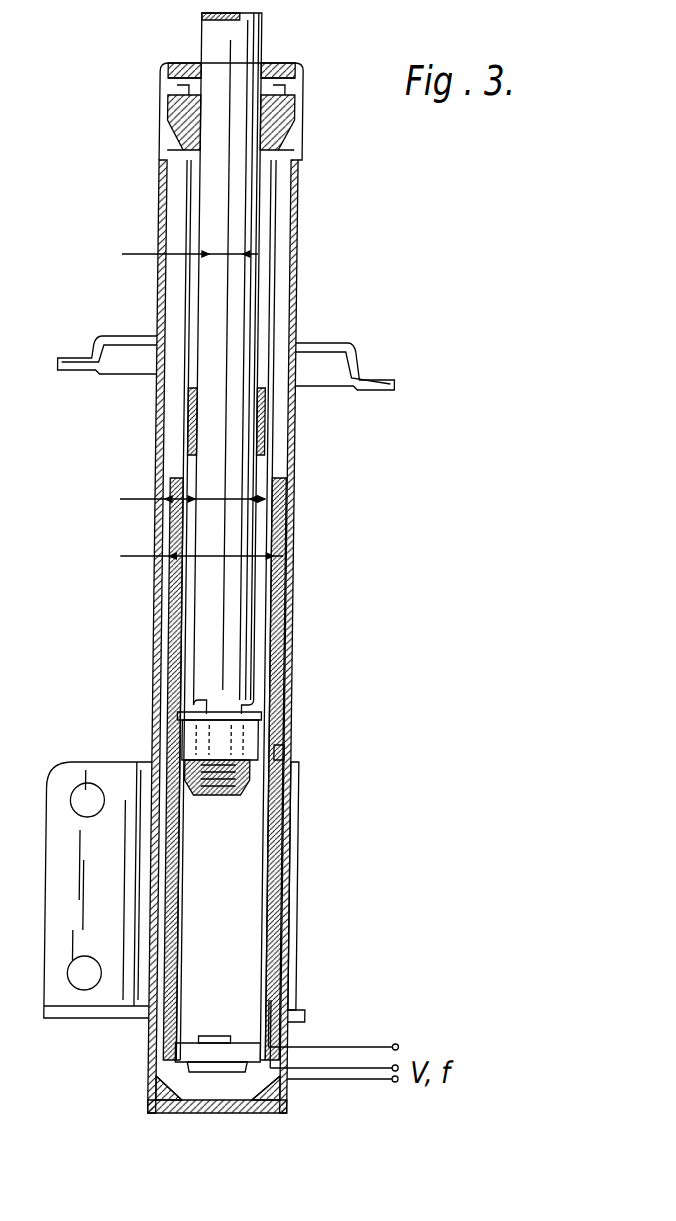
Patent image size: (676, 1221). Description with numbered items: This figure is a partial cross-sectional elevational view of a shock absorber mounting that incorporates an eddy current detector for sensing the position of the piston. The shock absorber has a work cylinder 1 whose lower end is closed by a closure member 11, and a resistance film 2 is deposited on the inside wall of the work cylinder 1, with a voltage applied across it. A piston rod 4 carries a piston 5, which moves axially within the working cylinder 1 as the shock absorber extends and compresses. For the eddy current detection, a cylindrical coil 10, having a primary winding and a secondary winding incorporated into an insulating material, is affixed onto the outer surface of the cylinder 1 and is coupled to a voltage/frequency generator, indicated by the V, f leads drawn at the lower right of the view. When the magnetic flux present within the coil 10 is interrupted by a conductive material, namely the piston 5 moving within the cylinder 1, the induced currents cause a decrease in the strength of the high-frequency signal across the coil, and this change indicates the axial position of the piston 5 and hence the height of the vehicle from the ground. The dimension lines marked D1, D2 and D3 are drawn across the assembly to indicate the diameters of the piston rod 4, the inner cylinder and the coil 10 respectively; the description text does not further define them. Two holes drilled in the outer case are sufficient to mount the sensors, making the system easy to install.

The work cylinder 1 is at (272, 865).
The resistance film 2 is at (261, 955).
The piston rod 4 is at (250, 45).
The piston 5 is at (271, 725).
The cylindrical coil 10 is at (296, 520).
The closure member 11 is at (299, 752).
The inner cylinder diameter D1 is at (176, 496).
The piston rod diameter D2 is at (173, 255).
The sleeve diameter D3 is at (185, 553).